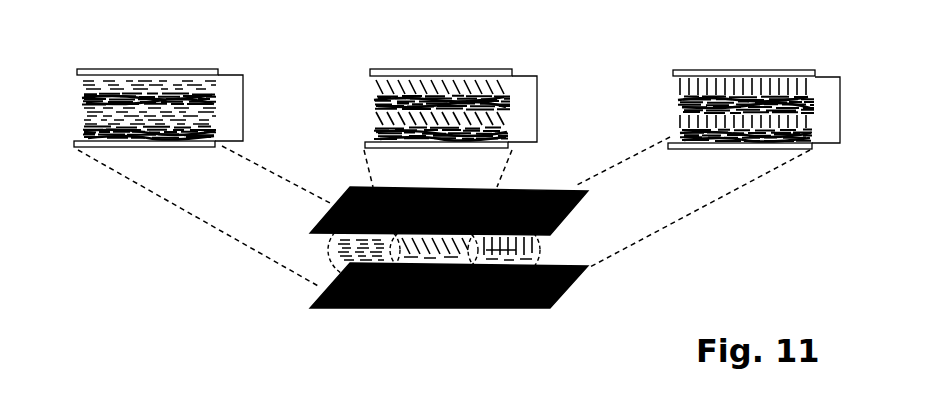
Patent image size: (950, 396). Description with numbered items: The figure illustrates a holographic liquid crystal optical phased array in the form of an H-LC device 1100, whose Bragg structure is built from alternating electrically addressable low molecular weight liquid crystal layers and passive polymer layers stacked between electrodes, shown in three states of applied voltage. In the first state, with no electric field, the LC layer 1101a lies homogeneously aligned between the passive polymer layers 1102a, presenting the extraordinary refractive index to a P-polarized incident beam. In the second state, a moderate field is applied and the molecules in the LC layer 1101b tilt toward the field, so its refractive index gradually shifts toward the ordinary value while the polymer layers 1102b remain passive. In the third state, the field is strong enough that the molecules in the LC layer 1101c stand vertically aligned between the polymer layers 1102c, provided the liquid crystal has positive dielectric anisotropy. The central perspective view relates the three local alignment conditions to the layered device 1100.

The H-LC device 1100 is at (441, 163).
The passive polymer layer 1102a is at (85, 95).
The low molecular weight LC layer 1101a is at (87, 117).
The passive polymer layer 1102b is at (375, 96).
The low molecular weight LC layer 1101b is at (375, 119).
The passive polymer layer 1102c is at (677, 96).
The low molecular weight LC layer 1101c is at (681, 119).